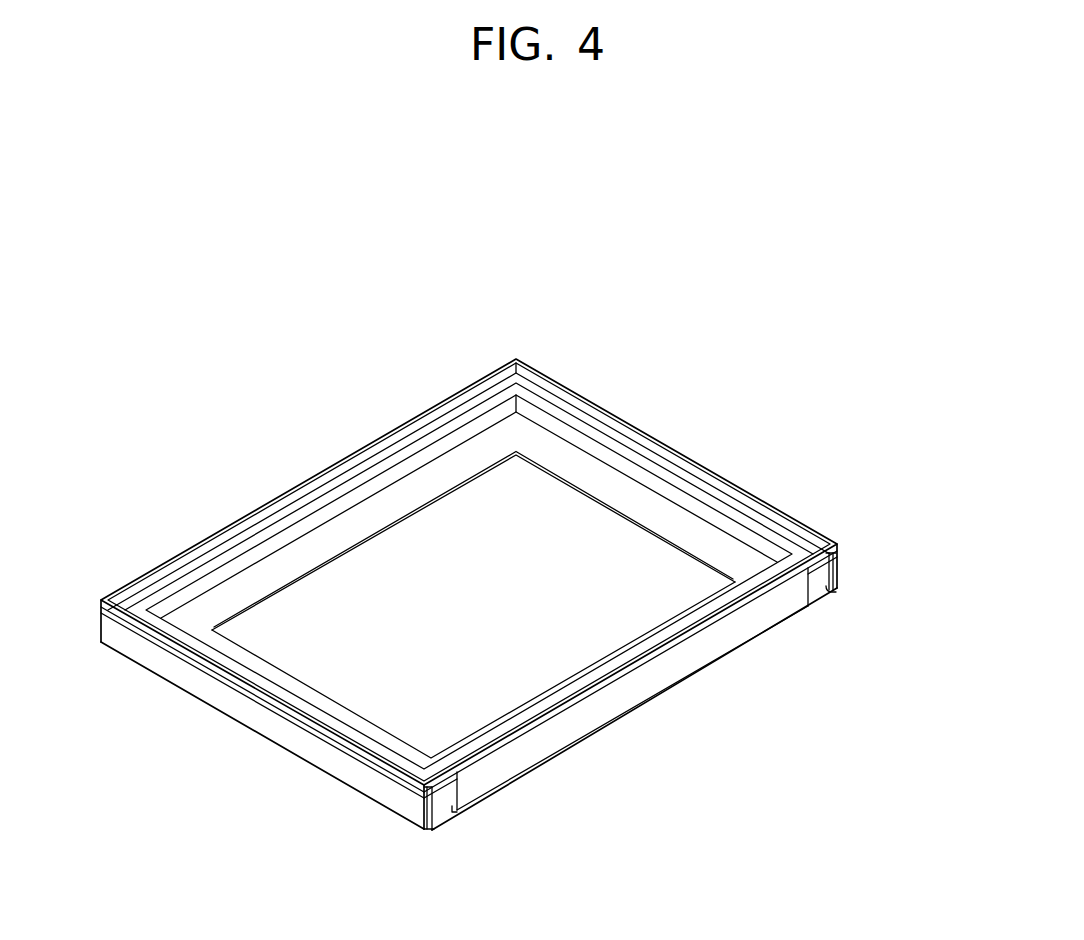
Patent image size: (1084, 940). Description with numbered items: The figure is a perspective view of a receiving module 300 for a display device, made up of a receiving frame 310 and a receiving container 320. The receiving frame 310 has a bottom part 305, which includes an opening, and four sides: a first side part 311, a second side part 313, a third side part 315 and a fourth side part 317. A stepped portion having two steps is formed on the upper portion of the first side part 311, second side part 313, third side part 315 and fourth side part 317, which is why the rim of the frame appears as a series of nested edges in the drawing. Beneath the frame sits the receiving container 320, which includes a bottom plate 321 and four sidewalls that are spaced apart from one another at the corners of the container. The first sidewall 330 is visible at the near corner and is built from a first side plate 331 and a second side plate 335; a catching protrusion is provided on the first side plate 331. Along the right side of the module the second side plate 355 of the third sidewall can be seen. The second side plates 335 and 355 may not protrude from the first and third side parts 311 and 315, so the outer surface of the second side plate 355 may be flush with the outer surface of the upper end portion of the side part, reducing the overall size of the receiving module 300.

The receiving module 300 is at (531, 247).
The bottom part 305 is at (695, 608).
The receiving frame 310 is at (852, 555).
The first side part 311 is at (285, 690).
The second side part 313 is at (692, 463).
The third side part 315 is at (618, 675).
The fourth side part 317 is at (311, 481).
The receiving container 320 is at (706, 697).
The bottom plate 321 is at (504, 675).
The first sidewall 330 is at (438, 883).
The first side plate 331 is at (429, 822).
The second side plate 335 is at (421, 823).
The second side plate 355 is at (500, 774).